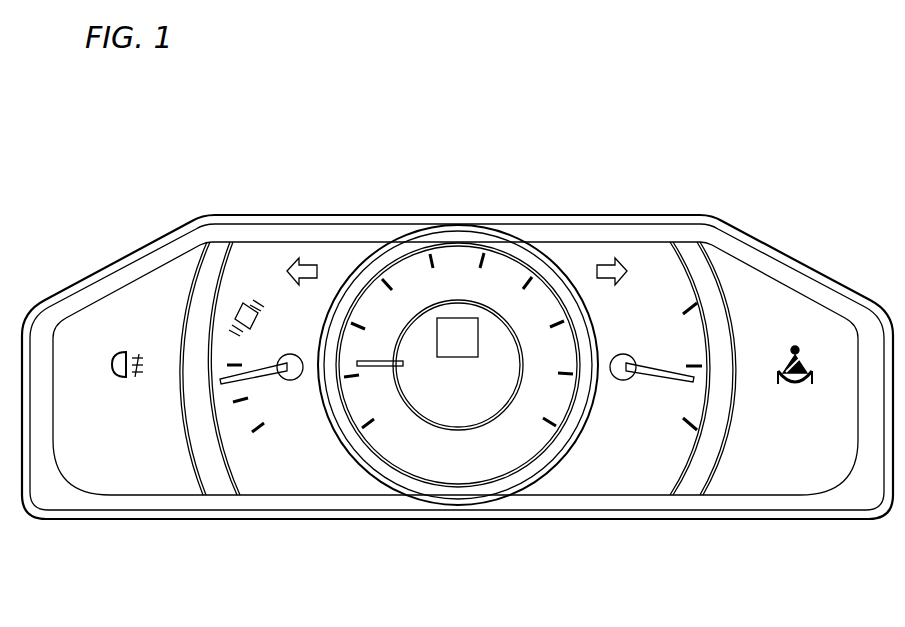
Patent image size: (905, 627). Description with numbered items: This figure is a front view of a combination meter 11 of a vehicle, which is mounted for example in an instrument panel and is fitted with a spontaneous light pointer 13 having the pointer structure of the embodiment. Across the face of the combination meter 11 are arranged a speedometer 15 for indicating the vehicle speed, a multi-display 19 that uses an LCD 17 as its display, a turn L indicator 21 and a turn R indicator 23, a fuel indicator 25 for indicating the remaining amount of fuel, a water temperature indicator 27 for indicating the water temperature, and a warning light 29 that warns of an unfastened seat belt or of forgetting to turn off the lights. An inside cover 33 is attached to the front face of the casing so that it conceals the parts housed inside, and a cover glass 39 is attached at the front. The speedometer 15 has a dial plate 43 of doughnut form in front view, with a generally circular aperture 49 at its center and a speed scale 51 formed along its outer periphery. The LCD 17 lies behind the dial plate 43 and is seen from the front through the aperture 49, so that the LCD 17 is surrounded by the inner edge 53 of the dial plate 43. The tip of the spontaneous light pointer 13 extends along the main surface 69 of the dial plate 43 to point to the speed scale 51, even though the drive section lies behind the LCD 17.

The combination meter 11 is at (55, 220).
The spontaneous light pointer 13 is at (365, 380).
The speedometer 15 is at (469, 211).
The LCD 17 is at (457, 420).
The multi-display 19 is at (484, 432).
The turn L indicator 21 is at (303, 270).
The turn R indicator 23 is at (604, 275).
The fuel indicator 25 is at (633, 305).
The water temperature indicator 27 is at (267, 283).
The warning light 29 is at (116, 350).
The inside cover 33 is at (210, 478).
The cover glass 39 is at (42, 498).
The dial plate 43 is at (513, 277).
The aperture 49 is at (400, 347).
The speed scale 51 is at (382, 326).
The inner edge 53 is at (421, 410).
The main surface 69 is at (355, 407).